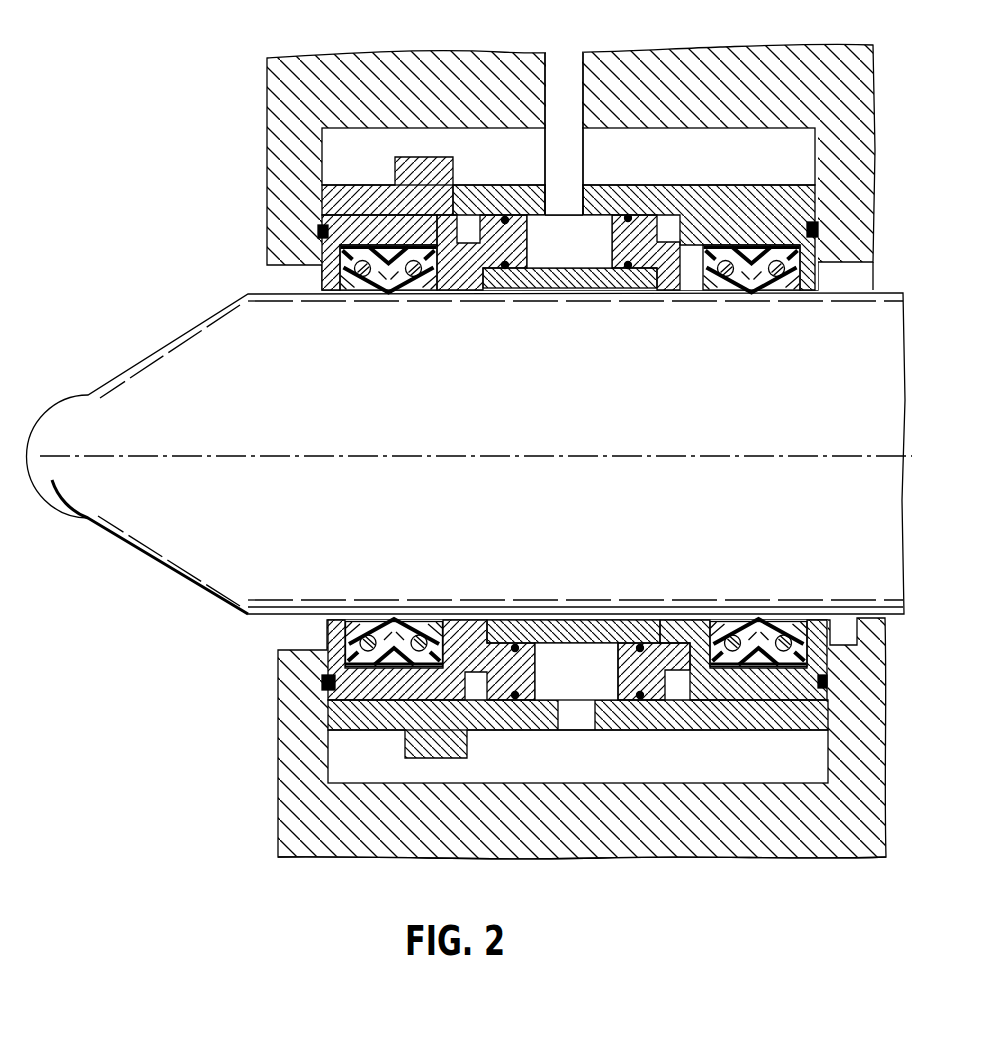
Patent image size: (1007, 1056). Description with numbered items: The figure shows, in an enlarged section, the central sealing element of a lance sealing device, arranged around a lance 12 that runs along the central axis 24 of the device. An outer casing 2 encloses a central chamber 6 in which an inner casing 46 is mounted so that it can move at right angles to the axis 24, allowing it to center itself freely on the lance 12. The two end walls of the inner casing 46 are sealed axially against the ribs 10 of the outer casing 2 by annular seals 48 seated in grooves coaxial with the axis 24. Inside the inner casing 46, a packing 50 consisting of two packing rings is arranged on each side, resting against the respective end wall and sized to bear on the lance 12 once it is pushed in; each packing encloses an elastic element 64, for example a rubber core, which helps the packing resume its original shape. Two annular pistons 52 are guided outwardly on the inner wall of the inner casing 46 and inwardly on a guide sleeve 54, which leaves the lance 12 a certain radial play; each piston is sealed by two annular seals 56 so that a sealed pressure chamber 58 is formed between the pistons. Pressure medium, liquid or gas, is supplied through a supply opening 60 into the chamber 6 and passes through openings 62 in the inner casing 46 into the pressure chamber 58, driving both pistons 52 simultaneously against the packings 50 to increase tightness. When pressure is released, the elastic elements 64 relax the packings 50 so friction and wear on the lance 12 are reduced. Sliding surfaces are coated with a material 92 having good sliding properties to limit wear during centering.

The outer casing 2 is at (638, 835).
The central chamber 6 is at (770, 770).
The ribs 10 is at (290, 733).
The lance 12 is at (623, 390).
The central axis 24 is at (295, 454).
The inner casing 46 is at (782, 200).
The annular seals 48 is at (322, 682).
The packing 50 is at (412, 640).
The annular pistons 52 is at (452, 258).
The guide sleeve 54 is at (577, 632).
The annular seals 56 is at (505, 261).
The pressure chamber 58 is at (575, 240).
The supply opening 60 is at (565, 64).
The openings 62 is at (575, 722).
The elastic element 64 is at (364, 278).
The material 92 is at (322, 292).